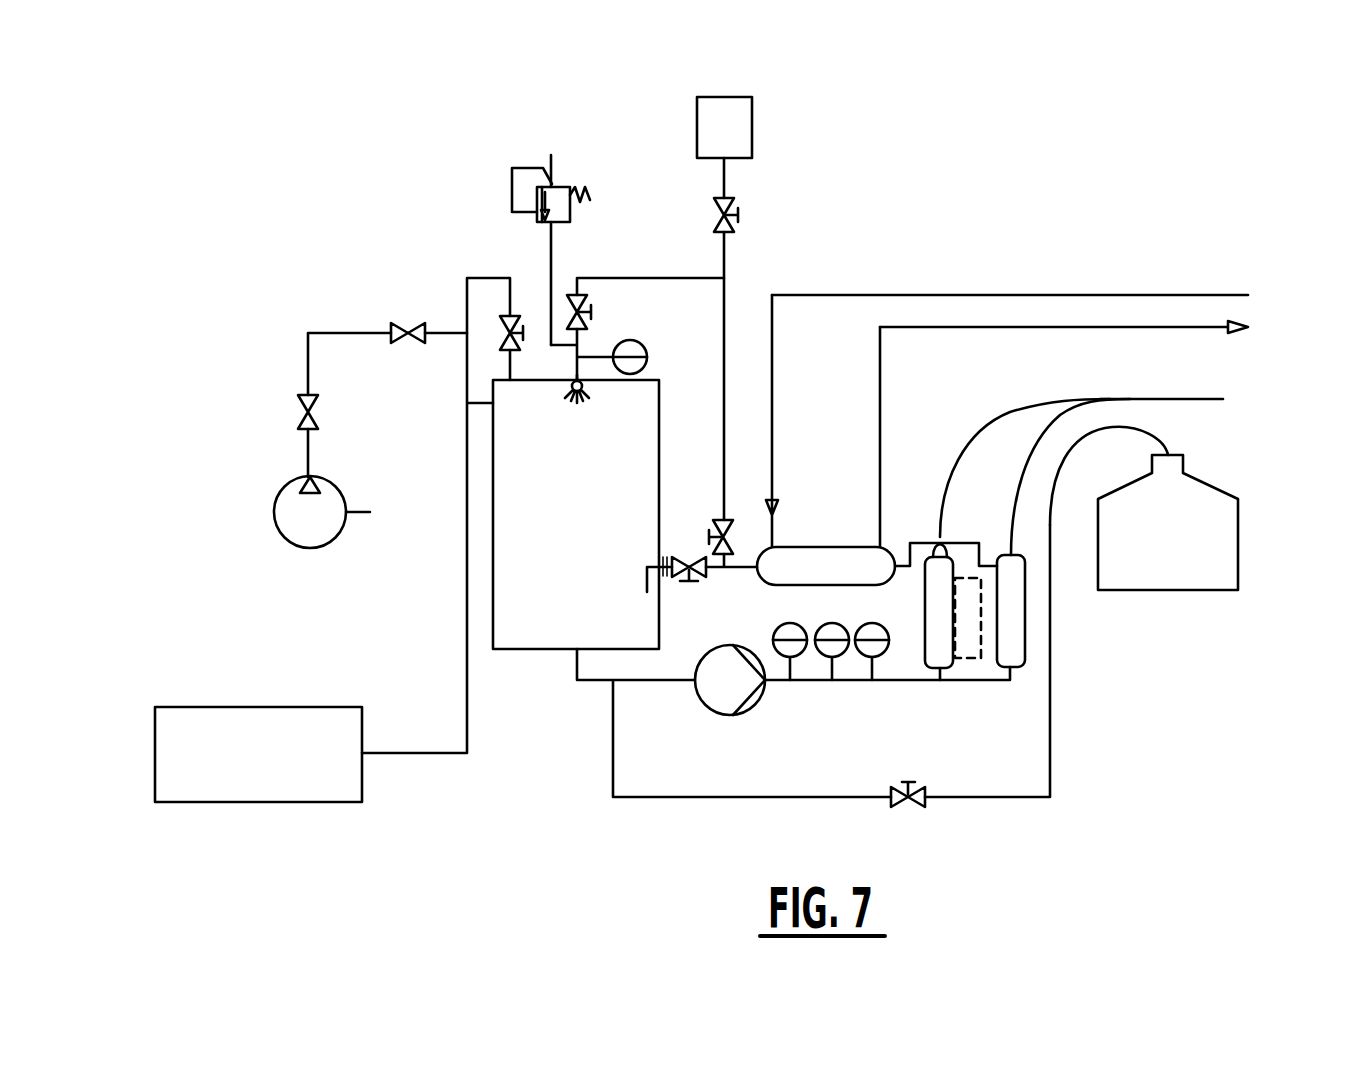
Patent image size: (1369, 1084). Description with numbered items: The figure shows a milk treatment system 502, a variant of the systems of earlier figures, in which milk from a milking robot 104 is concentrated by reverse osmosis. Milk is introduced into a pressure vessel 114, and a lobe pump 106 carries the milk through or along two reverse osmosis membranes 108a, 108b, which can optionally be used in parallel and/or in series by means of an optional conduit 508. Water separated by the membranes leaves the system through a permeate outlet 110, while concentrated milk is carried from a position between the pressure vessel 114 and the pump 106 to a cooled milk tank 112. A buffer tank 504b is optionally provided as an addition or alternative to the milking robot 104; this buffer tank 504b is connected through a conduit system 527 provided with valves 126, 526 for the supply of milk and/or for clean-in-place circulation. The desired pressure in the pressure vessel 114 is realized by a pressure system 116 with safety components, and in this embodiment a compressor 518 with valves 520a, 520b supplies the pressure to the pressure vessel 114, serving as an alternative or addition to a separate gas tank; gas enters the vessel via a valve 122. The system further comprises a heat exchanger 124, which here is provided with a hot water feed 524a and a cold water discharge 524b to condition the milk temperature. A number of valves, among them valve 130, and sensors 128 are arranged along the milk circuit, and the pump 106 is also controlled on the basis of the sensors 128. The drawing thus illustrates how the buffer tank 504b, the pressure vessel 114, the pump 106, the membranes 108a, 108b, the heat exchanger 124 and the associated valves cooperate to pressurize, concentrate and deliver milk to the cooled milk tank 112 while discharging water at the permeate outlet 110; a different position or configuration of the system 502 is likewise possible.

The milking robot 104 is at (199, 723).
The lobe pump 106 is at (708, 692).
The membrane 108a is at (940, 600).
The membrane 108b is at (1010, 610).
The permeate outlet 110 is at (1200, 399).
The cooled milk tank 112 is at (1223, 560).
The pressure vessel 114 is at (533, 633).
The pressure system 116 is at (604, 170).
The valve 122 is at (503, 352).
The heat exchanger 124 is at (803, 556).
The valve 126 is at (703, 512).
The sensors 128 is at (765, 627).
The valve 130 is at (920, 805).
The system 502 is at (882, 180).
The buffer tank 504b is at (738, 118).
The conduit 508 is at (981, 640).
The compressor 518 is at (282, 494).
The valve 520a is at (285, 405).
The valve 520b is at (413, 323).
The hot water feed 524a is at (1170, 295).
The cold water discharge 524b is at (1040, 327).
The valve 526 is at (762, 213).
The conduit system 527 is at (750, 270).